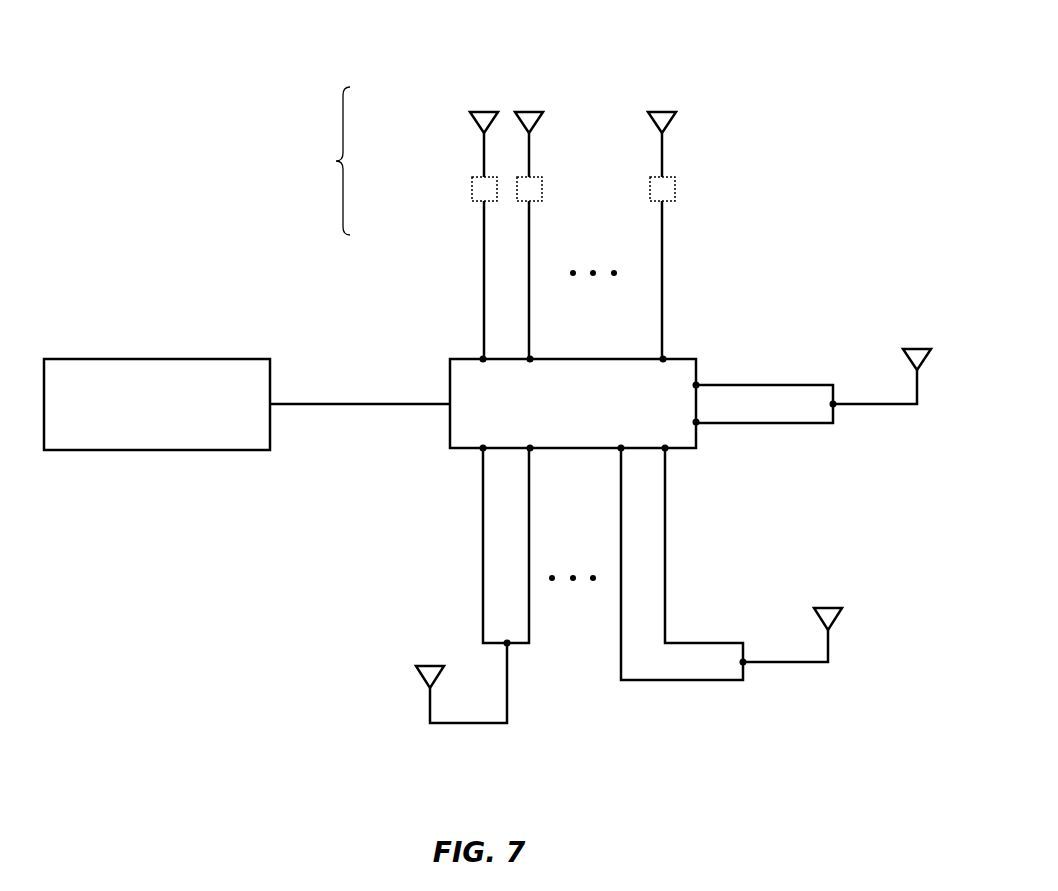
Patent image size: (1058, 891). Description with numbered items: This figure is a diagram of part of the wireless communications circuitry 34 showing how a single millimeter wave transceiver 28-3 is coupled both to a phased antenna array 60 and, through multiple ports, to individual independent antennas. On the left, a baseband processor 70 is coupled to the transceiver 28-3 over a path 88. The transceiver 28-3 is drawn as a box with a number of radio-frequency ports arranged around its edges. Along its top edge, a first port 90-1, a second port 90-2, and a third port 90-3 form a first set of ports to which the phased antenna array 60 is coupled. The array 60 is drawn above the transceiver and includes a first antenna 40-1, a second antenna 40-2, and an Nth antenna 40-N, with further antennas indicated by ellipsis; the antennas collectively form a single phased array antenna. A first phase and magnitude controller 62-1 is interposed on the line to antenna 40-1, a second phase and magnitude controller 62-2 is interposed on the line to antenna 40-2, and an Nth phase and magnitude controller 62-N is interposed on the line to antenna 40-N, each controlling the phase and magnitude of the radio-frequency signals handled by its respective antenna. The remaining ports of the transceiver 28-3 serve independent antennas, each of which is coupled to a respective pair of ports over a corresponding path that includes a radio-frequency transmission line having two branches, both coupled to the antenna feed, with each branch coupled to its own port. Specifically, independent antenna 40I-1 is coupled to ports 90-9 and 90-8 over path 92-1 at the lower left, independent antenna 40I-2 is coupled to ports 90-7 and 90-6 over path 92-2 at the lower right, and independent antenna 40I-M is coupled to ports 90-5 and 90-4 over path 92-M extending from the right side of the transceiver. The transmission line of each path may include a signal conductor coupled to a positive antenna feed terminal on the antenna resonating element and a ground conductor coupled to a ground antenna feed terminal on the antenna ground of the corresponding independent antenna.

The wireless communications circuitry 34 is at (203, 80).
The phased antenna array 60 is at (330, 161).
The first antenna 40-1 is at (470, 121).
The second antenna 40-2 is at (545, 121).
The Nth antenna 40-N is at (678, 121).
The first phase and magnitude controller 62-1 is at (471, 189).
The second phase and magnitude controller 62-2 is at (542, 189).
The Nth phase and magnitude controller 62-N is at (675, 189).
The baseband processor 70 is at (157, 359).
The path 88 is at (330, 403).
The transceiver 28-3 is at (450, 430).
The first port 90-1 is at (483, 357).
The second port 90-2 is at (530, 357).
The third port 90-3 is at (663, 357).
The port 90-4 is at (697, 384).
The port 90-5 is at (697, 423).
The port 90-6 is at (665, 450).
The port 90-7 is at (621, 450).
The port 90-8 is at (530, 450).
The port 90-9 is at (483, 450).
The path 92-1 is at (529, 688).
The path 92-2 is at (687, 699).
The path 92-M is at (881, 433).
The independent antenna 40I-1 is at (401, 686).
The independent antenna 40I-2 is at (826, 683).
The independent antenna 40I-M is at (919, 336).